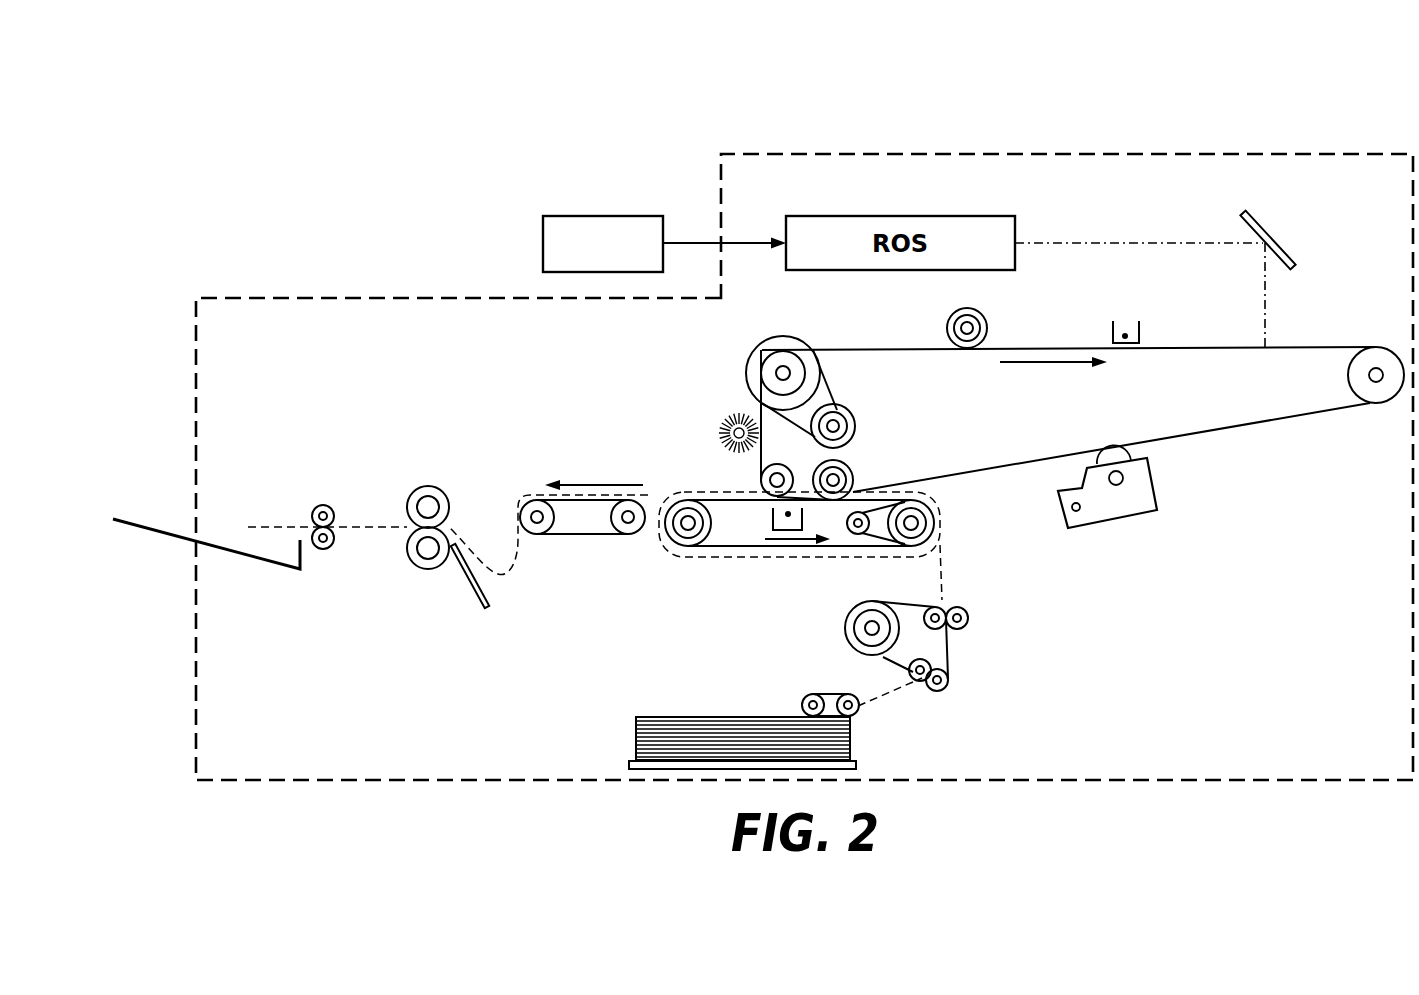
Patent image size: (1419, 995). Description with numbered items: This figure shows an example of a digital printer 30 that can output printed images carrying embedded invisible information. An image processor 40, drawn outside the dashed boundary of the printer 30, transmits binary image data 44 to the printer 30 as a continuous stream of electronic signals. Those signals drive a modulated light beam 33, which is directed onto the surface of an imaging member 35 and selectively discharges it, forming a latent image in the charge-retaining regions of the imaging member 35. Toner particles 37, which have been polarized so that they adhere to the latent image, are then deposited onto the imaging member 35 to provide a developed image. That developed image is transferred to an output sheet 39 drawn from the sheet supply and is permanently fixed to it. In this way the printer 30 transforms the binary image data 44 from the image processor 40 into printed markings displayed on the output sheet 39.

The digital printer 30 is at (955, 133).
The modulated light beam 33 is at (1128, 247).
The imaging member 35 is at (883, 348).
The toner particles 37 is at (1075, 488).
The output sheet 39 is at (710, 716).
The image processor 40 is at (601, 216).
The binary image data 44 is at (700, 245).